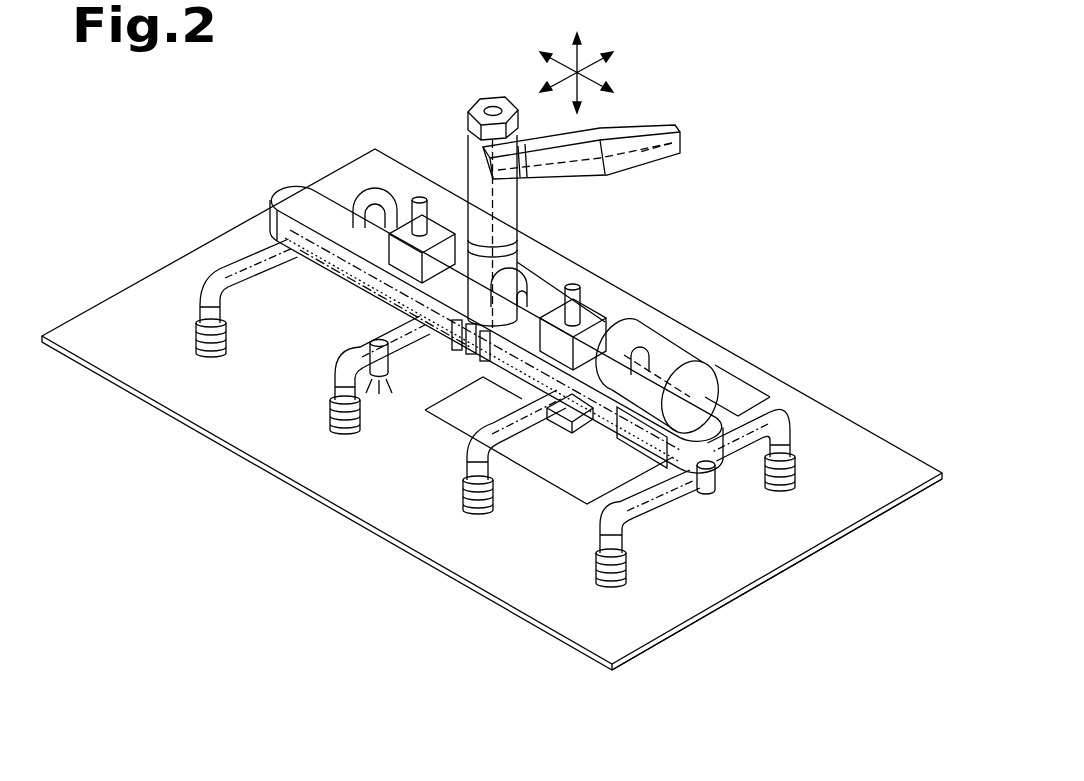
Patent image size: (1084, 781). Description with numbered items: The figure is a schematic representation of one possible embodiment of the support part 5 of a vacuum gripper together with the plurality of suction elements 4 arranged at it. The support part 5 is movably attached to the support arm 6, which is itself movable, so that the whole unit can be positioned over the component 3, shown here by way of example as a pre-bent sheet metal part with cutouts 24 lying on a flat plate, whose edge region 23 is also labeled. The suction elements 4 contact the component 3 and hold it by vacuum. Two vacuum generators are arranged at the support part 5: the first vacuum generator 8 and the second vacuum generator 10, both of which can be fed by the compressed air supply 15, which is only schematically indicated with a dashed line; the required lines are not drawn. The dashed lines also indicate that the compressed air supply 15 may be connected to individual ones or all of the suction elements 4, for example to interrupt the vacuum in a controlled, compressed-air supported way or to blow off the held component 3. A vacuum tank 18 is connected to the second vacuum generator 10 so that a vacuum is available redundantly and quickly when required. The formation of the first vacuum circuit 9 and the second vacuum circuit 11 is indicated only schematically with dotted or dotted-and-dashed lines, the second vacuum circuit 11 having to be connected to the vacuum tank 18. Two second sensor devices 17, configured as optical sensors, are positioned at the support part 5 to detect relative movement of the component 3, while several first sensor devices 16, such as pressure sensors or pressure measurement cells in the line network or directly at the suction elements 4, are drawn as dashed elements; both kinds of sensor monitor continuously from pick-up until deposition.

The component 3 is at (825, 433).
The suction elements 4 is at (333, 423).
The support part 5 is at (283, 192).
The support arm 6 is at (653, 121).
The first vacuum generator 8 is at (437, 210).
The first vacuum circuit 9 is at (247, 258).
The second vacuum generator 10 is at (590, 317).
The second vacuum circuit 11 is at (650, 507).
The compressed air supply 15 is at (672, 143).
The first sensor devices 16 is at (130, 262).
The second sensor devices 17 is at (383, 393).
The vacuum tank 18 is at (673, 353).
The plate edge 23 is at (842, 494).
The cutouts 24 is at (749, 379).